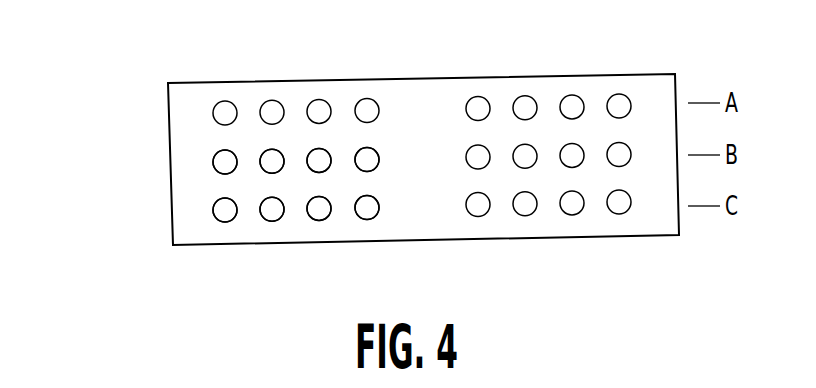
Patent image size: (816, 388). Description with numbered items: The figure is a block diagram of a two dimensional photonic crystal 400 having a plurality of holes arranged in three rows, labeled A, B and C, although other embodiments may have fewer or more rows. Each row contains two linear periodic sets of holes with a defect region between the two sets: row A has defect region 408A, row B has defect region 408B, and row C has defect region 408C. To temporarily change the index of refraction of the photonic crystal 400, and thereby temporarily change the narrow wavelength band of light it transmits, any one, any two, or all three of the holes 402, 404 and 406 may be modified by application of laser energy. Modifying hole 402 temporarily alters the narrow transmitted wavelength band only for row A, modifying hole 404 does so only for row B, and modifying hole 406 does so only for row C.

The two dimensional photonic crystal 400 is at (129, 115).
The hole 402 is at (219, 101).
The hole 404 is at (213, 163).
The hole 406 is at (213, 212).
The defect region 408A is at (400, 111).
The defect region 408B is at (432, 150).
The defect region 408C is at (435, 212).